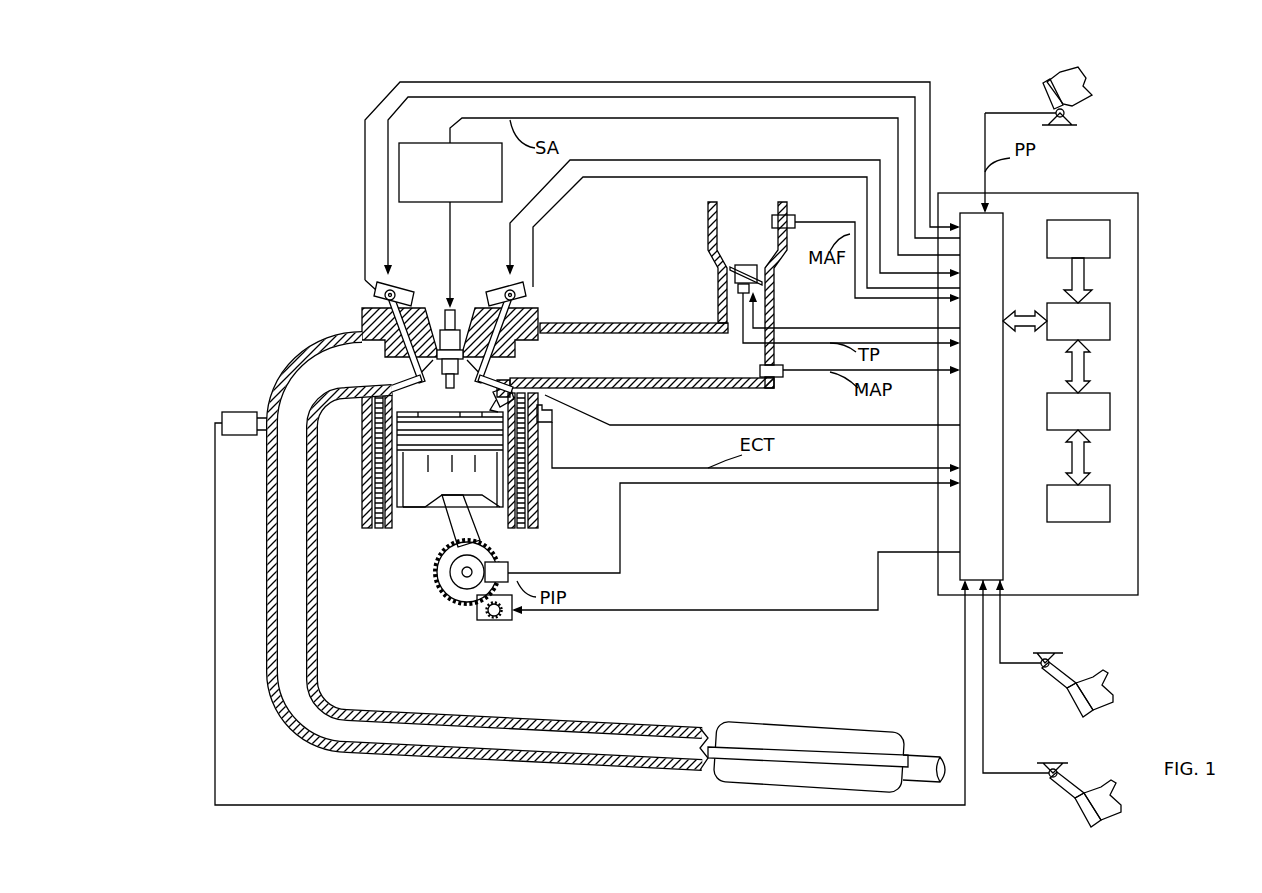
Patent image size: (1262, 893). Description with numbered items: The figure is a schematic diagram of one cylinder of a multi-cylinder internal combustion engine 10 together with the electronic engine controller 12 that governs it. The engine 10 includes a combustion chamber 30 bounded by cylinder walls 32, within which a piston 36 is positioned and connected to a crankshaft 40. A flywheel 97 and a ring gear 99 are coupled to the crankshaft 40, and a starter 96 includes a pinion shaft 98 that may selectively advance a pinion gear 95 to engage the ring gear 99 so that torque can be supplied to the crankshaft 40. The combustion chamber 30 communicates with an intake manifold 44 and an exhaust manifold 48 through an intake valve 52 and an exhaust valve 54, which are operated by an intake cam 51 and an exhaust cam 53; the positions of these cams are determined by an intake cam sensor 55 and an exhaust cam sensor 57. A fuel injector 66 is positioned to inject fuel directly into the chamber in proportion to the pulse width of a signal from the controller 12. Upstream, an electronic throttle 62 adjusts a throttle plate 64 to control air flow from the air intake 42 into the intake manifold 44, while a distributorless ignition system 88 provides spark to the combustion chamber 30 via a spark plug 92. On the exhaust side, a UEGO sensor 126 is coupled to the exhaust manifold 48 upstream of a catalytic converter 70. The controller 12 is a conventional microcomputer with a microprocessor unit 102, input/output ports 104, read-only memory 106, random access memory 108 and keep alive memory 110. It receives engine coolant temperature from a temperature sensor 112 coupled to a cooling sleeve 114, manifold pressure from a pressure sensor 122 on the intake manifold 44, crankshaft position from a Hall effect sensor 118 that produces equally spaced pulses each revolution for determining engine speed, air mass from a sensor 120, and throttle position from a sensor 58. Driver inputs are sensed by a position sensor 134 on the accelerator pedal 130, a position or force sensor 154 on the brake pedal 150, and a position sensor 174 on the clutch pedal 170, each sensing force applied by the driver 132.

The internal combustion engine 10 is at (300, 267).
The electronic engine controller 12 is at (1080, 380).
The combustion chamber 30 is at (470, 402).
The cylinder walls 32 is at (400, 513).
The piston 36 is at (435, 482).
The crankshaft 40 is at (457, 600).
The air intake 42 is at (735, 245).
The intake manifold 44 is at (680, 365).
The exhaust manifold 48 is at (322, 370).
The intake cam 51 is at (500, 277).
The intake valve 52 is at (487, 363).
The exhaust cam 53 is at (400, 277).
The exhaust valve 54 is at (360, 341).
The intake cam sensor 55 is at (518, 296).
The exhaust cam sensor 57 is at (378, 294).
The throttle position sensor 58 is at (728, 292).
The electronic throttle 62 is at (757, 270).
The throttle plate 64 is at (728, 268).
The fuel injector 66 is at (537, 388).
The catalytic converter 70 is at (730, 720).
The distributorless ignition system 88 is at (412, 143).
The spark plug 92 is at (452, 307).
The pinion gear 95 is at (502, 620).
The starter 96 is at (491, 630).
The flywheel 97 is at (447, 567).
The pinion shaft 98 is at (490, 618).
The ring gear 99 is at (463, 607).
The microprocessor unit 102 is at (1110, 325).
The input/output ports 104 is at (1003, 222).
The read-only memory 106 is at (1110, 238).
The random access memory 108 is at (1110, 412).
The keep alive memory 110 is at (1110, 500).
The temperature sensor 112 is at (553, 423).
The cooling sleeve 114 is at (530, 485).
The Hall effect sensor 118 is at (508, 562).
The air mass sensor 120 is at (790, 215).
The pressure sensor 122 is at (781, 378).
The Universal Exhaust Gas Oxygen (UEGO) sensor 126 is at (222, 413).
The accelerator pedal 130 is at (1090, 433).
The driver 132 is at (1087, 80).
The position sensor 134 is at (1070, 115).
The brake pedal 150 is at (1047, 675).
The position or force sensor 154 is at (1036, 657).
The clutch pedal 170 is at (1057, 784).
The position sensor 174 is at (1044, 766).